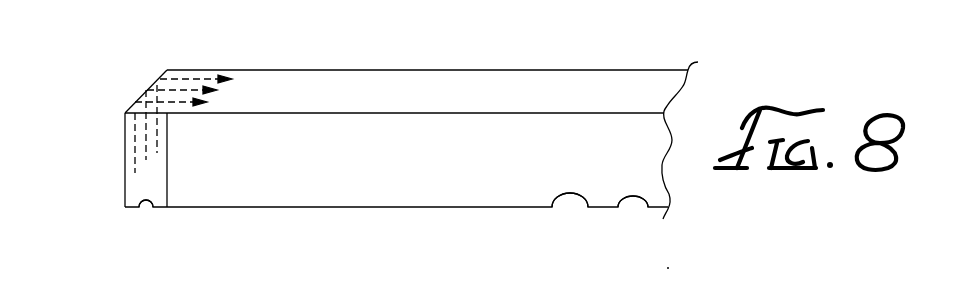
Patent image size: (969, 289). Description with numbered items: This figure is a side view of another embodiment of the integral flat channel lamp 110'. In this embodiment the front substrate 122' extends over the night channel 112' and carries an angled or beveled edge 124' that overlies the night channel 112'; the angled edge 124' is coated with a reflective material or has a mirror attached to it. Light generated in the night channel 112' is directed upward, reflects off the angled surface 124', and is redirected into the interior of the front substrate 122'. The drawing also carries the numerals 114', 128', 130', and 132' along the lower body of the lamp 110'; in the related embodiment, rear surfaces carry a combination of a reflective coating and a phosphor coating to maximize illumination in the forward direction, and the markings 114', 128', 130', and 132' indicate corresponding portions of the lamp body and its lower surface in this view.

The integral flat channel lamp 110' is at (411, 124).
The front substrate 122' is at (394, 71).
The angled or beveled edge 124' is at (138, 116).
The night channel 112' is at (128, 227).
The front face 114' is at (209, 184).
The bottom edge 128' is at (396, 224).
The arch recess 130' is at (555, 224).
The arch recess 132' is at (618, 225).